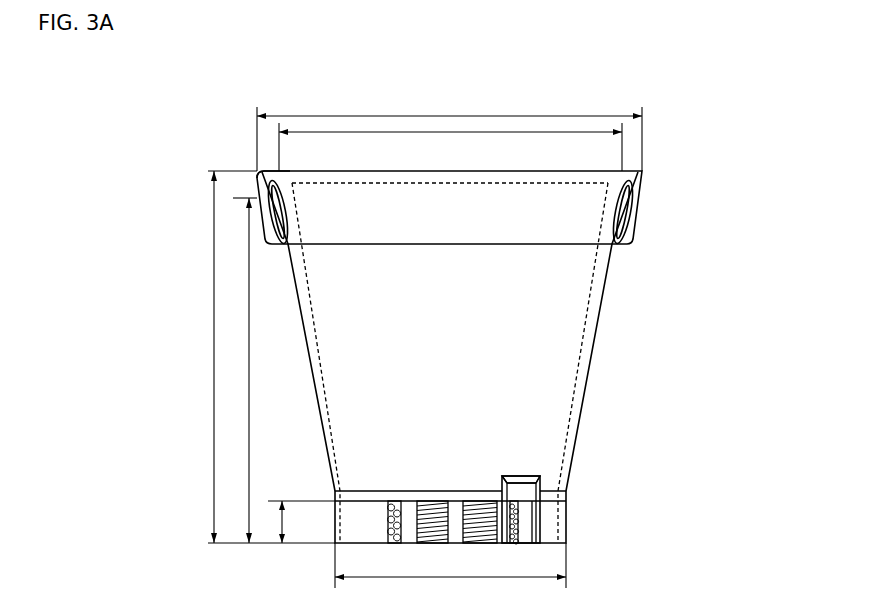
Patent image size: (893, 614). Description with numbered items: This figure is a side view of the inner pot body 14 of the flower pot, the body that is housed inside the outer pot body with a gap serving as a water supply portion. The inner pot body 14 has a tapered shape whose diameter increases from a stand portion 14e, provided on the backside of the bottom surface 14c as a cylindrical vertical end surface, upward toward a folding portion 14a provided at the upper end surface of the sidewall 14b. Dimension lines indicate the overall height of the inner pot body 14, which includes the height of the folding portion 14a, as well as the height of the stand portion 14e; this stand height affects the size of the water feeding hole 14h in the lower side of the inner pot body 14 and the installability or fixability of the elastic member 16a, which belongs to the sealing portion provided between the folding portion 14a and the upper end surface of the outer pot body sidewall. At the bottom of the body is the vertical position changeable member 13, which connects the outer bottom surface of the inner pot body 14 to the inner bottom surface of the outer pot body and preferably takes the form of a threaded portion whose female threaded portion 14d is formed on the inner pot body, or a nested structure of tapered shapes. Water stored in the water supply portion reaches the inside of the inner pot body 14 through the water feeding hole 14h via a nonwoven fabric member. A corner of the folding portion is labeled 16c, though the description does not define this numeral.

The inner pot body 14 is at (697, 58).
The folding portion 14a is at (262, 222).
The sidewall 14b is at (600, 304).
The bottom surface 14c is at (566, 497).
The stand portion 14e is at (566, 533).
The water feeding hole 14h is at (543, 487).
The female threaded portion 14d is at (470, 501).
The vertical position changeable member 13 is at (470, 501).
The elastic member 16a is at (278, 247).
The corner portion 16c is at (255, 187).